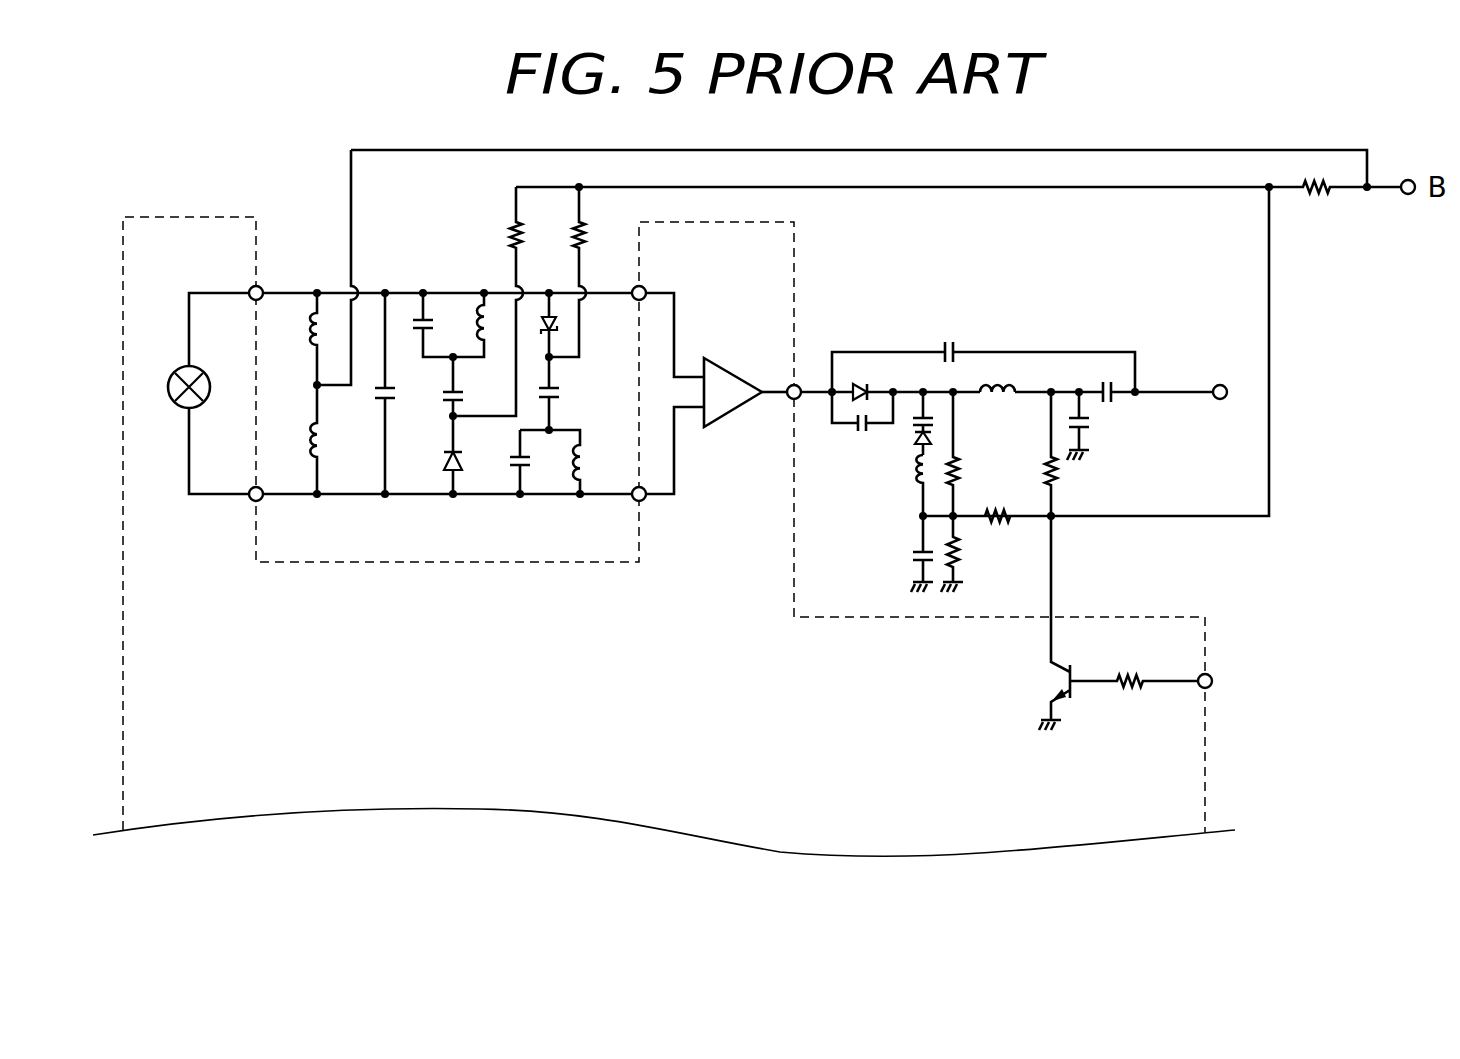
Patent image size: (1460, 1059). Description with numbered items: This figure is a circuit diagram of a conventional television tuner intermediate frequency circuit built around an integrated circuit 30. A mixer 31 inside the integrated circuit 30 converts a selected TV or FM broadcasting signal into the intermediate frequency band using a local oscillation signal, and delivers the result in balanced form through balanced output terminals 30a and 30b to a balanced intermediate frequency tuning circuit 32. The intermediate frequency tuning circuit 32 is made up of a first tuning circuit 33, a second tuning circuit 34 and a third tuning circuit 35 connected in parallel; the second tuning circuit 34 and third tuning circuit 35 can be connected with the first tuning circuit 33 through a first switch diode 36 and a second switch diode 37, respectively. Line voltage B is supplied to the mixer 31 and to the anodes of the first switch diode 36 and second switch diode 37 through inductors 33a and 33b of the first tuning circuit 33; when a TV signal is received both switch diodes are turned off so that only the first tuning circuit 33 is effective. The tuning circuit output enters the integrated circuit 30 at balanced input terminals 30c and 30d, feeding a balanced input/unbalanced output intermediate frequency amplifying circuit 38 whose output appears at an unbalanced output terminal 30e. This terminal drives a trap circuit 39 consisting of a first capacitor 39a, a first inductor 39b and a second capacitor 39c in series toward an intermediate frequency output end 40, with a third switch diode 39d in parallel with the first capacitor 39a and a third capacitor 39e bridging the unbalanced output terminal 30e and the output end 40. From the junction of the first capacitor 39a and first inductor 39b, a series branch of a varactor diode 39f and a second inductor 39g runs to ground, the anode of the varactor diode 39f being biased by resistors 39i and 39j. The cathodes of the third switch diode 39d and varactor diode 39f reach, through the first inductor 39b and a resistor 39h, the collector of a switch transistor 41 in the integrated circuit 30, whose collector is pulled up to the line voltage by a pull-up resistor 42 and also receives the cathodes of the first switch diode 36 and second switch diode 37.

The integrated circuit 30 is at (307, 786).
The balanced output terminal 30a is at (252, 287).
The balanced output terminal 30b is at (252, 489).
The balanced input terminal 30c is at (644, 287).
The balanced input terminal 30d is at (643, 501).
The unbalanced output terminal 30e is at (784, 399).
The mixer 31 is at (178, 370).
The intermediate frequency tuning circuit 32 is at (533, 500).
The first tuning circuit 33 is at (308, 462).
The inductor 33a is at (314, 345).
The inductor 33b is at (314, 423).
The second tuning circuit 34 is at (456, 314).
The third tuning circuit 35 is at (552, 478).
The first switch diode 36 is at (451, 452).
The second switch diode 37 is at (565, 325).
The intermediate frequency amplifying circuit 38 is at (727, 378).
The trap circuit 39 is at (986, 413).
The first capacitor 39a is at (862, 432).
The first inductor 39b is at (996, 399).
The second capacitor 39c is at (1108, 400).
The third switch diode 39d is at (860, 384).
The third capacitor 39e is at (954, 345).
The varactor diode 39f is at (921, 440).
The second inductor 39g is at (920, 482).
The resistor 39h is at (1057, 473).
The resistor 39i is at (959, 466).
The resistor 39j is at (960, 548).
The intermediate frequency output end 40 is at (1222, 384).
The switch transistor 41 is at (1060, 682).
The pull-up resistor 42 is at (1312, 193).